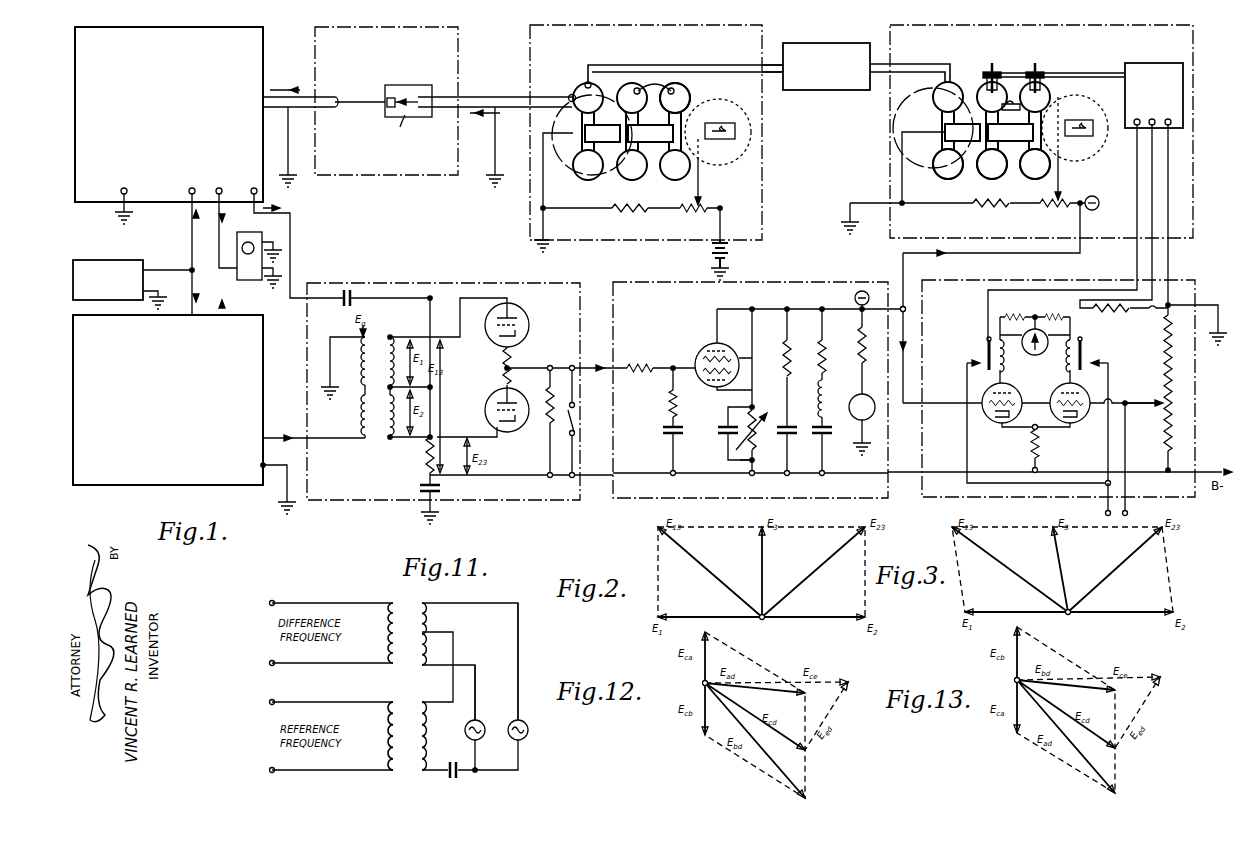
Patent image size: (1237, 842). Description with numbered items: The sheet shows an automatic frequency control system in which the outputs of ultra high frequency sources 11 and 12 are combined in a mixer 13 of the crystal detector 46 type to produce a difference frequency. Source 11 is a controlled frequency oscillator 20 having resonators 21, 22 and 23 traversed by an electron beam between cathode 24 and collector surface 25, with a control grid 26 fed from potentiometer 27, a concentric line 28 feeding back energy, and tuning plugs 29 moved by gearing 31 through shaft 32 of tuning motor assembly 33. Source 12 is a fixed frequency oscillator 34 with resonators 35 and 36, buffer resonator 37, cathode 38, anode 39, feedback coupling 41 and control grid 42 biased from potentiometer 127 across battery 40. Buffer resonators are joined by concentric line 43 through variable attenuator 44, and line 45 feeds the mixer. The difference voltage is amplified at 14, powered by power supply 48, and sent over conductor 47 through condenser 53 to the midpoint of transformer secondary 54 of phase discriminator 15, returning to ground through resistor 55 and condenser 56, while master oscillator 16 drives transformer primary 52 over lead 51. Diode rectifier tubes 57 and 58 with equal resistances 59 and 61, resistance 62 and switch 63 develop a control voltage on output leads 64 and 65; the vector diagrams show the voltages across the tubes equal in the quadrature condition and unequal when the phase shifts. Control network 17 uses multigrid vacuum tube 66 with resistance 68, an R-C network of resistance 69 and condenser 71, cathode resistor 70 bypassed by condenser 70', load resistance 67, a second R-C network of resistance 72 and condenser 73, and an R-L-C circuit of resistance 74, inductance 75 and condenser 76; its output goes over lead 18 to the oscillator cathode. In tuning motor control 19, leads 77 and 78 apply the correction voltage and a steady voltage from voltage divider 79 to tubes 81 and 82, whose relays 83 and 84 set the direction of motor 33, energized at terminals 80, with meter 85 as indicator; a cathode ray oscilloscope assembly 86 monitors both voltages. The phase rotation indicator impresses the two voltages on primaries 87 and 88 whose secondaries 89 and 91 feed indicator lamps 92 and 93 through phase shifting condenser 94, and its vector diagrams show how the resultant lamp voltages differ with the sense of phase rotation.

In FIG. 1, the ultra high frequency source 11 is at (1195, 30).
In FIG. 1, the ultra high frequency source 12 is at (761, 25).
In FIG. 1, the mixer 13 is at (460, 35).
In FIG. 1, the amplifier 14 is at (265, 36).
In FIG. 1, the phase discriminator 15 is at (339, 280).
In FIG. 1, the master audio frequency oscillator 16 is at (184, 414).
In FIG. 1, the control network circuit 17 is at (880, 280).
In FIG. 1, the lead 18 is at (943, 256).
In FIG. 1, the tuning motor control circuit 19 is at (1182, 278).
In FIG. 1, the oscillator 20 is at (985, 62).
In FIG. 1, the resonator 21 is at (1040, 178).
In FIG. 1, the resonator 22 is at (993, 179).
In FIG. 1, the buffer resonator 23 is at (955, 178).
In FIG. 1, the cathode 24 is at (1085, 114).
In FIG. 1, the collector surface 25 is at (930, 165).
In FIG. 1, the control grid 26 is at (1056, 108).
In FIG. 1, the potentiometer 27 is at (1060, 208).
In FIG. 1, the concentric line 28 is at (1011, 102).
In FIG. 1, the tuning plugs 29 is at (985, 74).
In FIG. 1, the gearing 31 is at (1040, 70).
In FIG. 1, the shaft 32 is at (1092, 72).
In FIG. 1, the tuning motor assembly 33 is at (1165, 58).
In FIG. 1, the oscillator 34 is at (620, 176).
In FIG. 1, the resonator 35 is at (692, 94).
In FIG. 1, the resonator 36 is at (608, 86).
In FIG. 1, the buffer resonator 37 is at (571, 95).
In FIG. 1, the cathode 38 is at (717, 122).
In FIG. 1, the anode 39 is at (575, 169).
In FIG. 1, the battery 40 is at (742, 256).
In FIG. 1, the feedback coupling 41 is at (655, 82).
In FIG. 1, the control grid 42 is at (714, 160).
In FIG. 1, the concentric line 43 is at (781, 76).
In FIG. 1, the variable attenuator 44 is at (845, 90).
In FIG. 1, the line 45 is at (485, 96).
In FIG. 1, the crystal detector 46 is at (432, 87).
In FIG. 1, the conductor 47 is at (292, 246).
In FIG. 1, the power supply 48 is at (95, 258).
In FIG. 1, the lead 51 is at (284, 433).
In FIG. 1, the transformer primary 52 is at (360, 422).
In FIG. 1, the condenser 53 is at (345, 310).
In FIG. 1, the transformer secondary 54 is at (396, 410).
In FIG. 1, the resistor 55 is at (425, 460).
In FIG. 1, the condenser 56 is at (418, 492).
In FIG. 1, the diode rectifier tube 57 is at (523, 313).
In FIG. 1, the diode rectifier tube 58 is at (507, 432).
In FIG. 1, the resistance 59 is at (502, 357).
In FIG. 1, the resistance 61 is at (502, 372).
In FIG. 1, the resistance 62 is at (548, 422).
In FIG. 1, the short-circuiting switch 63 is at (576, 418).
In FIG. 1, the output lead 64 is at (591, 367).
In FIG. 1, the output lead 65 is at (598, 478).
In FIG. 1, the multigrid vacuum tube 66 is at (703, 348).
In FIG. 1, the resistance 67 is at (869, 352).
In FIG. 1, the resistance 68 is at (642, 365).
In FIG. 1, the resistance 69 is at (670, 405).
In FIG. 1, the cathode resistor 70 is at (757, 391).
In FIG. 1, the condenser 70' is at (726, 433).
In FIG. 1, the condenser 71 is at (666, 434).
In FIG. 1, the resistance 72 is at (783, 348).
In FIG. 1, the condenser 73 is at (755, 461).
In FIG. 1, the resistance 74 is at (826, 348).
In FIG. 1, the inductance 75 is at (827, 408).
In FIG. 1, the condenser 76 is at (829, 436).
In FIG. 1, the lead 77 is at (935, 406).
In FIG. 1, the lead 78 is at (1143, 402).
In FIG. 1, the voltage divider 79 is at (1173, 388).
In FIG. 1, the terminals 80 is at (1128, 512).
In FIG. 1, the tube 81 is at (1001, 423).
In FIG. 1, the tube 82 is at (1073, 423).
In FIG. 1, the relay 83 is at (1003, 358).
In FIG. 1, the relay 84 is at (1082, 356).
In FIG. 1, the meter 85 is at (1043, 356).
In FIG. 1, the cathode ray oscilloscope assembly 86 is at (263, 232).
In FIG. 11, the primary 87 is at (388, 603).
In FIG. 11, the primary 88 is at (390, 706).
In FIG. 11, the secondary 89 is at (432, 631).
In FIG. 11, the secondary 91 is at (438, 738).
In FIG. 11, the indicator lamp 92 is at (481, 722).
In FIG. 11, the indicator lamp 93 is at (528, 725).
In FIG. 11, the condenser 94 is at (449, 780).
In FIG. 1, the potentiometer 127 is at (620, 214).